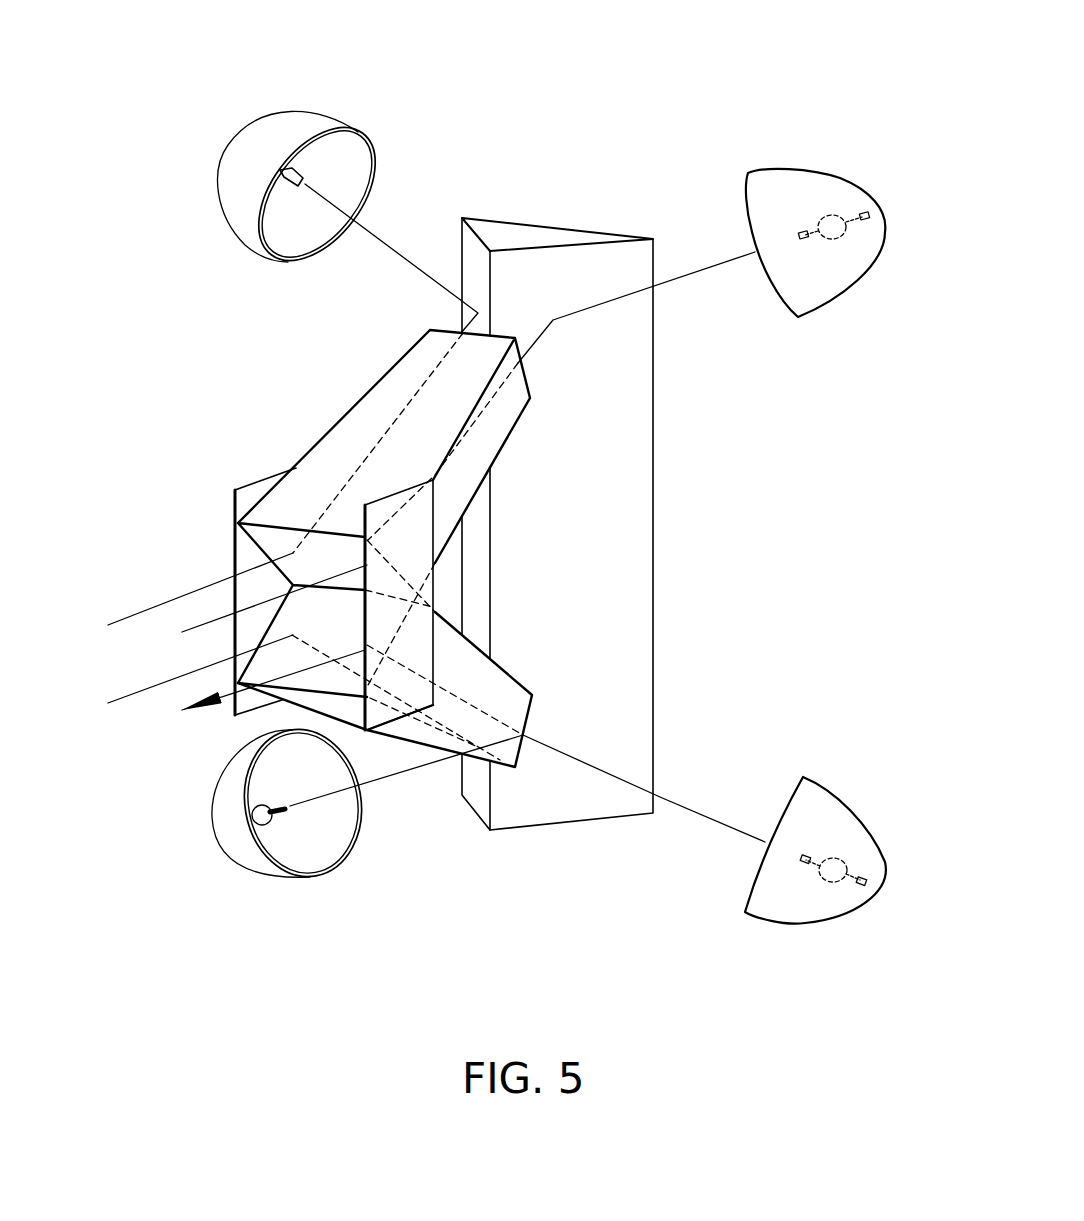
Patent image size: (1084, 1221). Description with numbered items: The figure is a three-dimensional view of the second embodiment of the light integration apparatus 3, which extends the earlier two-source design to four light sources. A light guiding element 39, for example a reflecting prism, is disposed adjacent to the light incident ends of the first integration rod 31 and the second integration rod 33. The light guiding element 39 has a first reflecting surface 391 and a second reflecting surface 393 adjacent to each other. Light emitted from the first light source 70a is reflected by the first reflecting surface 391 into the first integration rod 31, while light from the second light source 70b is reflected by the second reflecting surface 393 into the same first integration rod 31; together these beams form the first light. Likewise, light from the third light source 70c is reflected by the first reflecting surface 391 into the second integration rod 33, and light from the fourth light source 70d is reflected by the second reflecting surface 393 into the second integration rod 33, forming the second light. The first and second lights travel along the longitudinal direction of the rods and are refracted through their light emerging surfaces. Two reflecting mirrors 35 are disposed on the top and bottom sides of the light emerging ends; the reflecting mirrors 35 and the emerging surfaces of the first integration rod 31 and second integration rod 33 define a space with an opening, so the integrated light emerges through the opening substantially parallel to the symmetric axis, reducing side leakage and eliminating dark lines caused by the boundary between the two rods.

The light integration apparatus 3 is at (552, 110).
The first integration rod 31 is at (368, 380).
The second integration rod 33 is at (520, 668).
The reflecting mirrors 35 is at (377, 512).
The light guiding element 39 is at (552, 220).
The first reflecting surface 391 is at (473, 250).
The second reflecting surface 393 is at (632, 260).
The first light source 70a is at (283, 112).
The second light source 70b is at (818, 175).
The third light source 70c is at (258, 873).
The fourth light source 70d is at (818, 928).